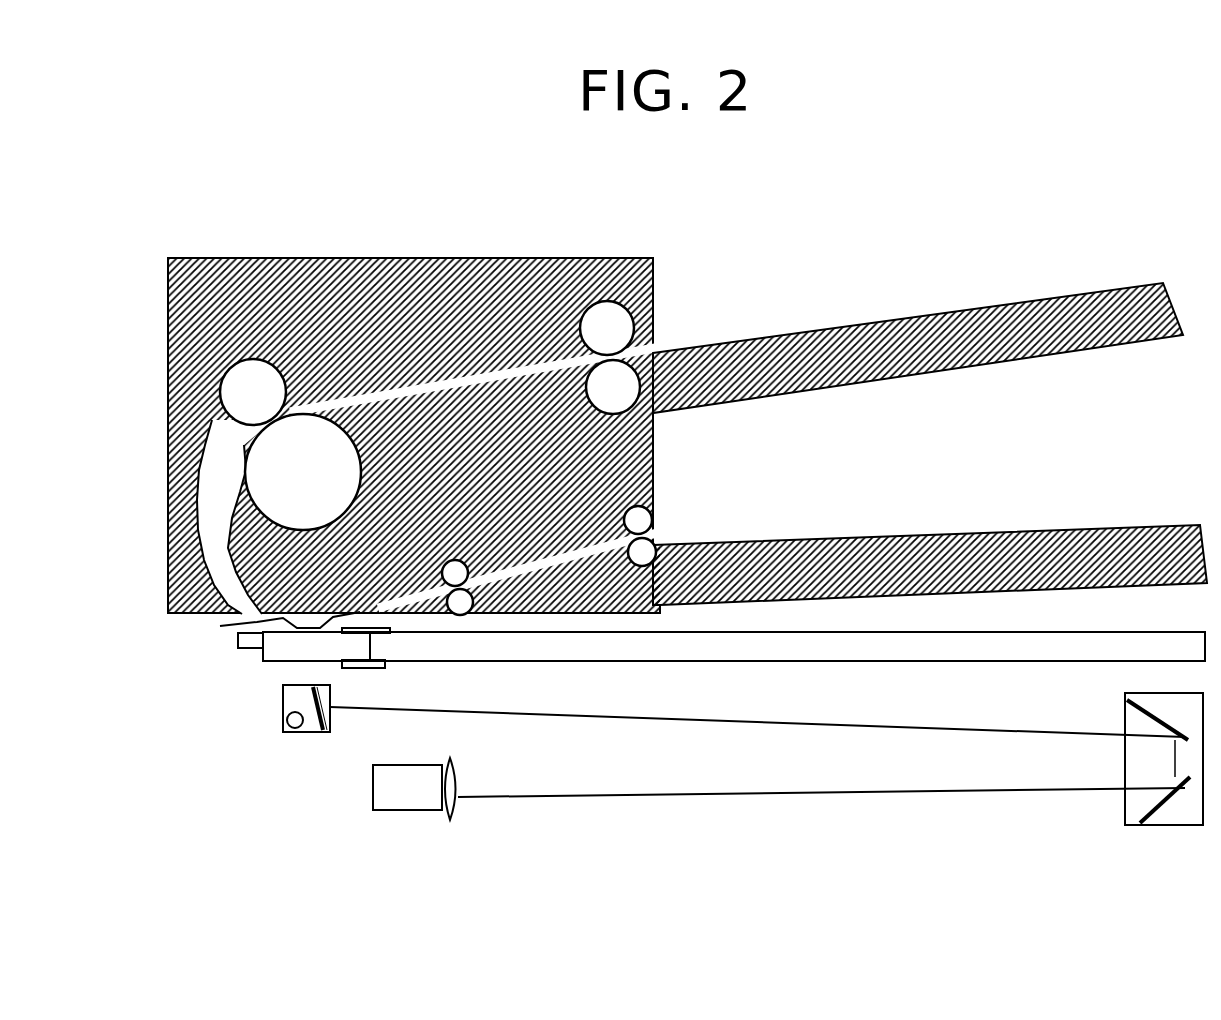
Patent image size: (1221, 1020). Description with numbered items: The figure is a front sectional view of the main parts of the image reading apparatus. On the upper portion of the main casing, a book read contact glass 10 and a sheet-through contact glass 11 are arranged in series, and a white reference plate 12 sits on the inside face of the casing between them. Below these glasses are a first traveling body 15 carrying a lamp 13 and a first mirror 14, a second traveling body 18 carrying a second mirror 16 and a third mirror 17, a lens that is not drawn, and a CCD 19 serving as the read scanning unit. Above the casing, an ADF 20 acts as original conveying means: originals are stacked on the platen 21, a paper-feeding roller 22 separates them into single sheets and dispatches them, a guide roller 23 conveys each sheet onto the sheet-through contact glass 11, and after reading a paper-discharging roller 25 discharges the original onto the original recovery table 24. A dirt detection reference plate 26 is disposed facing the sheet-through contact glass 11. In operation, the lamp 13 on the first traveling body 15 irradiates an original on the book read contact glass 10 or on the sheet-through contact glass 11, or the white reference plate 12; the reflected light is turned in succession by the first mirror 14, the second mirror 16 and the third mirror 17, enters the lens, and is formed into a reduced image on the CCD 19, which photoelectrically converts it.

The book read contact glass 10 is at (873, 662).
The sheet-through contact glass 11 is at (283, 660).
The white reference plate 12 is at (362, 668).
The lamp 13 is at (285, 735).
The first mirror 14 is at (323, 732).
The first traveling body 15 is at (283, 700).
The second mirror 16 is at (1125, 697).
The third mirror 17 is at (1140, 823).
The second traveling body 18 is at (1165, 828).
The CCD 19 is at (398, 815).
The ADF 20 is at (365, 248).
The platen 21 is at (1022, 300).
The paper-feeding roller 22 is at (657, 350).
The guide roller 23 is at (245, 497).
The original recovery table 24 is at (1038, 522).
The paper-discharging roller 25 is at (655, 522).
The dirt detection reference plate 26 is at (240, 625).